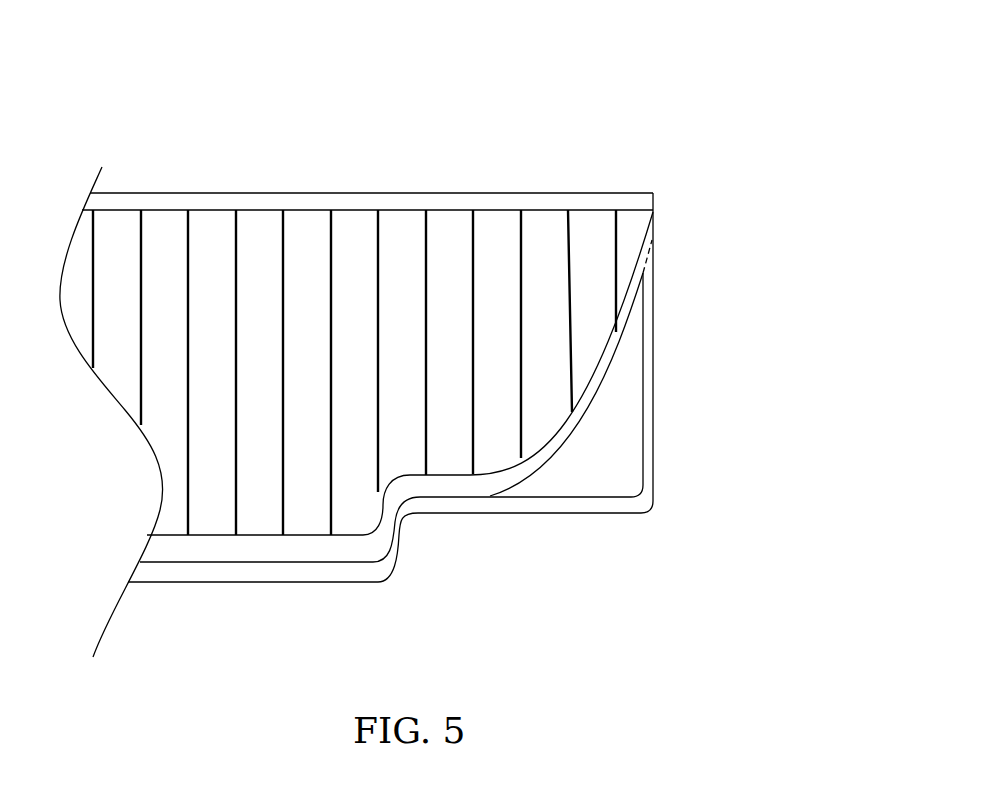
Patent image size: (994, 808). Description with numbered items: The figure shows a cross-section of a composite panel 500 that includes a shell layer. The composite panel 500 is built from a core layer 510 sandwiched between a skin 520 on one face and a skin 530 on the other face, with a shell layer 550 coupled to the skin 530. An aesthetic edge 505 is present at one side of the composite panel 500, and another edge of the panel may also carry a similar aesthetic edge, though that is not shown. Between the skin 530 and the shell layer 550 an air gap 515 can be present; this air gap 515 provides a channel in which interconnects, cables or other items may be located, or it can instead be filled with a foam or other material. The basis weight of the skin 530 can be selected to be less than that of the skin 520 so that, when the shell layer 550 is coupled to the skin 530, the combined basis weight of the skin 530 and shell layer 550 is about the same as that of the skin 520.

The composite panel 500 is at (250, 150).
The aesthetic edge 505 is at (653, 497).
The core layer 510 is at (450, 265).
The air gap 515 is at (598, 460).
The skin 520 is at (617, 193).
The skin 530 is at (622, 330).
The shell layer 550 is at (655, 415).